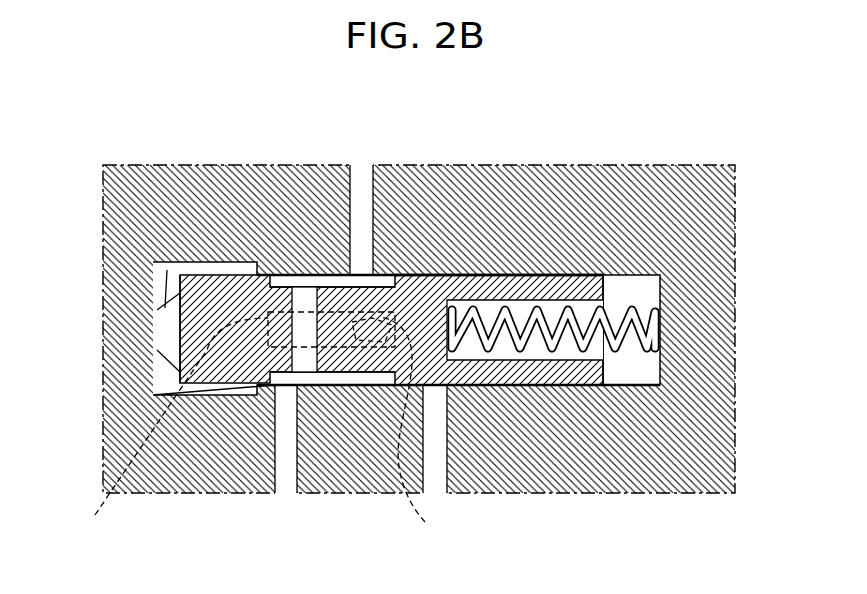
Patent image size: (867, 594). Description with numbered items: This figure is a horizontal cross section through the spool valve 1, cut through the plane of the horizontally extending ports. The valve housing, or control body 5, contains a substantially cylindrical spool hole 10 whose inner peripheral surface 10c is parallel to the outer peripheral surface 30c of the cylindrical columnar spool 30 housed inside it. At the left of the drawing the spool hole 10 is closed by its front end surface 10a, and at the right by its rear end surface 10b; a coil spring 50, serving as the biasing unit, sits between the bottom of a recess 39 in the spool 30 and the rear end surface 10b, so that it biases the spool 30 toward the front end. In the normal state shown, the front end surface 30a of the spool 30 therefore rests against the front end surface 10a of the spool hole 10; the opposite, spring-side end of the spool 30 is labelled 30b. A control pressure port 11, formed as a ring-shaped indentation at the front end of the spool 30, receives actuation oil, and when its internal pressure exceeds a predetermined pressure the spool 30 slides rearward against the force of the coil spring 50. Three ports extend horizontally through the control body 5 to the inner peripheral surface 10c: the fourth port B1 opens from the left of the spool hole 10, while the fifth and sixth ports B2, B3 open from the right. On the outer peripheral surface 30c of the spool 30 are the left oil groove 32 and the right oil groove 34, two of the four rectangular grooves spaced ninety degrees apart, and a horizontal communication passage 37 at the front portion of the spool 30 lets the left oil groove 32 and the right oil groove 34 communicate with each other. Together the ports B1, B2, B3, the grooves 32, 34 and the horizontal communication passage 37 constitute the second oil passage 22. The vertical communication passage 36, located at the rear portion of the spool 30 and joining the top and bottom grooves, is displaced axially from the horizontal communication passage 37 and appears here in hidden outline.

The spool valve 1 is at (452, 270).
The valve housing (control body) 5 is at (715, 200).
The spool hole 10 is at (419, 332).
The front end surface of the spool hole 10a is at (157, 295).
The rear end surface of the spool hole 10b is at (607, 372).
The inner peripheral surface 10c is at (462, 275).
The control pressure port 11 is at (167, 272).
The second oil passage 22 is at (367, 332).
The fourth port B1 is at (360, 198).
The fifth port B2 is at (282, 456).
The sixth port B3 is at (442, 450).
The spool 30 is at (432, 332).
The front end surface of the spool 30a is at (153, 338).
The second spool end 30b is at (653, 388).
The outer peripheral surface 30c is at (403, 272).
The left oil groove (second oil groove) 32 is at (278, 275).
The right oil groove (fourth oil groove) 34 is at (382, 526).
The vertical communication passage (first communication passage) 36 is at (395, 434).
The horizontal communication passage (second communication passage) 37 is at (305, 386).
The recess of the spool 39 is at (655, 373).
The coil spring (biasing unit) 50 is at (640, 300).